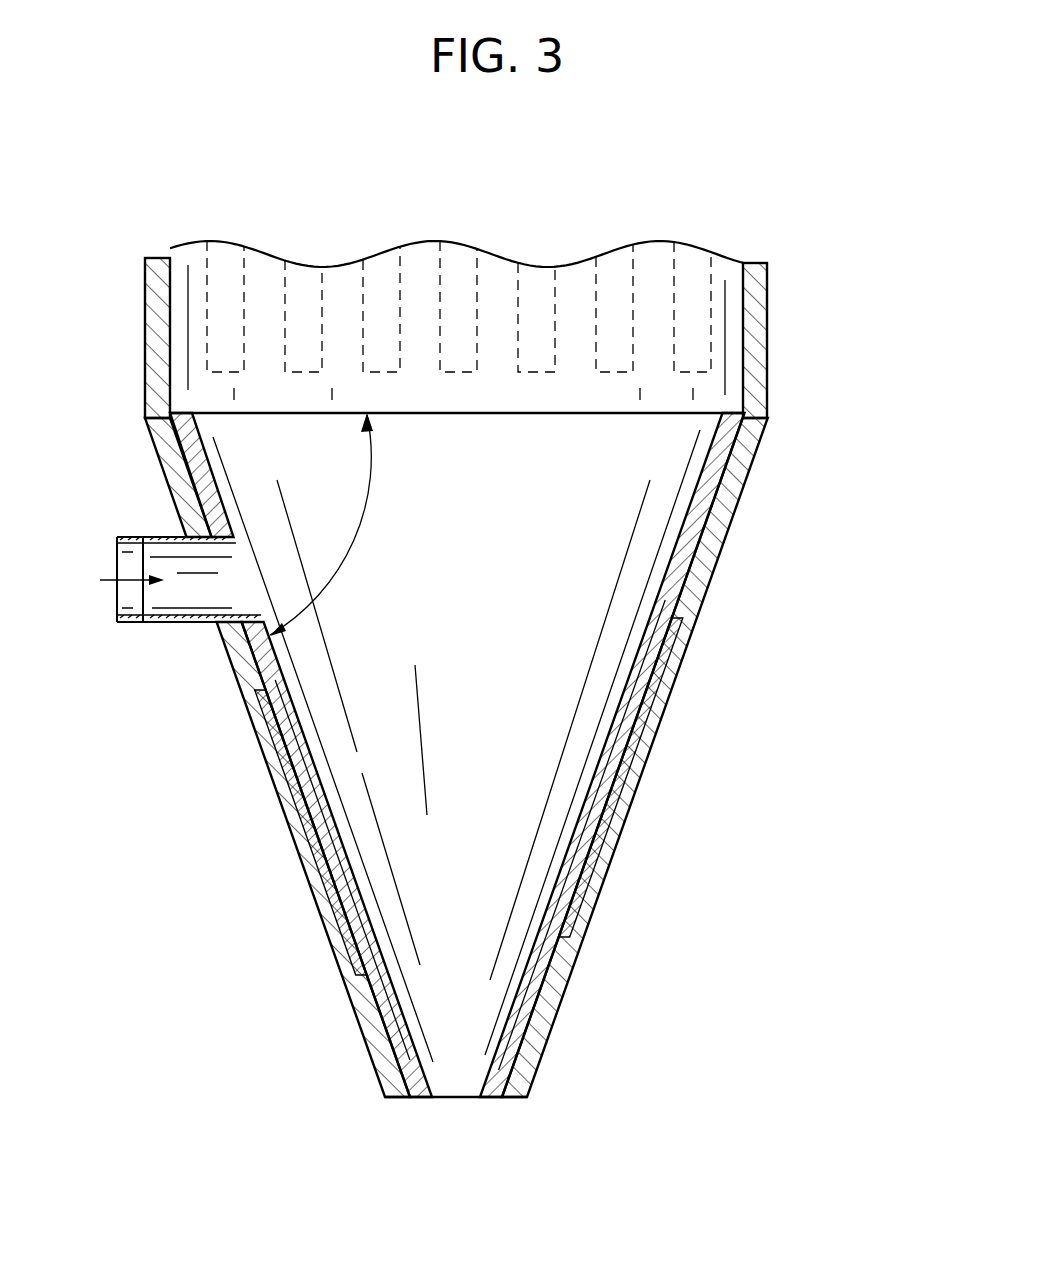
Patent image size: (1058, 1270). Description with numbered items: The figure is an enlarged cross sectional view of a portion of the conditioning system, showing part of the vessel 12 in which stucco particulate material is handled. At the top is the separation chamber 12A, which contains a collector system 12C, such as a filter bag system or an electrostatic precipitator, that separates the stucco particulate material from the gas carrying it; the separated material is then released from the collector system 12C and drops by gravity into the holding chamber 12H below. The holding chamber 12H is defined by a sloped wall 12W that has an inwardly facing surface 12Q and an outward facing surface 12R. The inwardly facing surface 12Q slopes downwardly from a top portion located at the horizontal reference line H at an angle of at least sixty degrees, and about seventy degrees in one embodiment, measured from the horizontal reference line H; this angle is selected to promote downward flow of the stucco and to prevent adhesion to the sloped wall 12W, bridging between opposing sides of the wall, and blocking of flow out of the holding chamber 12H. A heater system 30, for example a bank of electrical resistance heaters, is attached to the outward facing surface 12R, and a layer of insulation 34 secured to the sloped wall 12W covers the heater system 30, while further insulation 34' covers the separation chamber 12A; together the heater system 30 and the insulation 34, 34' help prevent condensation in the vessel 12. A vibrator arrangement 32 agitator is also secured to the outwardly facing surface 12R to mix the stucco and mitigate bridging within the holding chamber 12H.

The vessel 12 is at (868, 296).
The separation chamber 12A is at (793, 262).
The holding chamber 12H is at (818, 1097).
The collector system 12C is at (195, 307).
The insulation 34' is at (456, 294).
The horizontal reference line H is at (425, 418).
The heater system 30 is at (352, 968).
The vibrator arrangement 32 is at (585, 883).
The inwardly facing surface 12Q is at (407, 1020).
The outward facing surface 12R is at (532, 1022).
The insulation 34 is at (313, 864).
The sloped wall 12W is at (408, 1065).